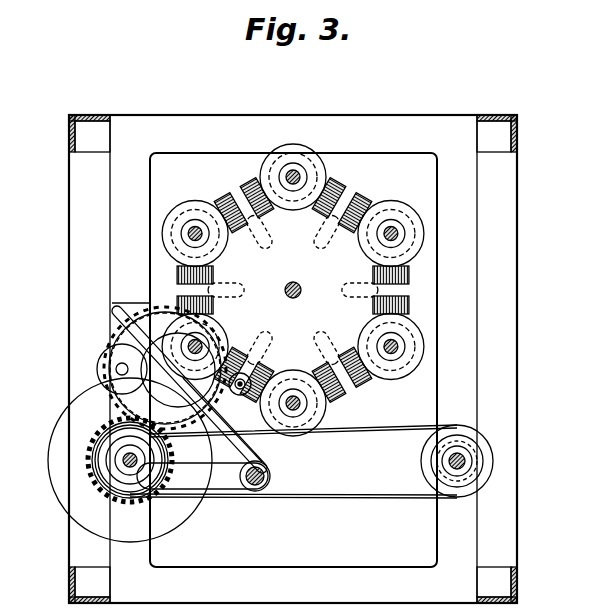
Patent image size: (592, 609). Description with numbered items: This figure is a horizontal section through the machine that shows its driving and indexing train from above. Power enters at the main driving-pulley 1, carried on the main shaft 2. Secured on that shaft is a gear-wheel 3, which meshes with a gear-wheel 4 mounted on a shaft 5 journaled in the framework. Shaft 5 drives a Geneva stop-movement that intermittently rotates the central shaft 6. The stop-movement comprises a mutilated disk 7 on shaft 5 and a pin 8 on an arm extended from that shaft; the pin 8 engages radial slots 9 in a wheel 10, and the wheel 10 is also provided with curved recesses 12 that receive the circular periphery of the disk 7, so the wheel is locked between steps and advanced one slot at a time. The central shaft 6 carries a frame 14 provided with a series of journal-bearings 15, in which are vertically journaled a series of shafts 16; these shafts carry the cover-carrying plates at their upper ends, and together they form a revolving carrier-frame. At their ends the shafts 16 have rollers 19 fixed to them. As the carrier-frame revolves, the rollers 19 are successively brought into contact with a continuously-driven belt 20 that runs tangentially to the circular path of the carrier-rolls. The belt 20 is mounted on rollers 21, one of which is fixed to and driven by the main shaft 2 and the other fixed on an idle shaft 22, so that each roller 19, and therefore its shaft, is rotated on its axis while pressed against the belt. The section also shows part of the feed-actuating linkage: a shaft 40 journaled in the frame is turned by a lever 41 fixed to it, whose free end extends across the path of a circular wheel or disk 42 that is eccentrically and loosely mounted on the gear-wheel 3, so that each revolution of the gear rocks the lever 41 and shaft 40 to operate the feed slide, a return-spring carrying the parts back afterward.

The main driving-pulley 1 is at (49, 462).
The main shaft 2 is at (125, 477).
The gear-wheel 3 is at (103, 435).
The gear-wheel 4 is at (225, 408).
The shaft 5 is at (165, 368).
The central shaft 6 is at (301, 290).
The mutilated disk 7 is at (147, 298).
The pin 8 is at (242, 368).
The radial slots 9 is at (235, 205).
The wheel 10 is at (345, 305).
The curved recesses 12 is at (415, 243).
The frame 14 is at (293, 290).
The journal-bearings 15 is at (308, 183).
The shafts 16 is at (300, 176).
The rollers 19 is at (189, 208).
The belt 20 is at (310, 498).
The rollers 21 is at (107, 470).
The idle shaft 22 is at (470, 458).
The shaft 40 is at (272, 477).
The lever 41 is at (256, 449).
The circular wheel or disk 42 is at (97, 371).